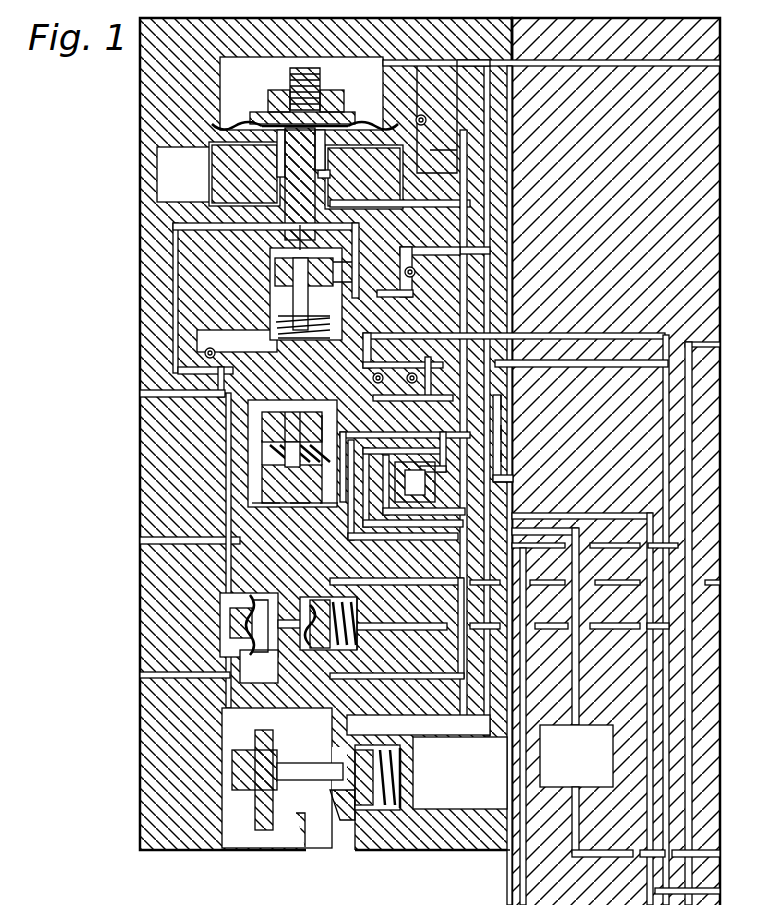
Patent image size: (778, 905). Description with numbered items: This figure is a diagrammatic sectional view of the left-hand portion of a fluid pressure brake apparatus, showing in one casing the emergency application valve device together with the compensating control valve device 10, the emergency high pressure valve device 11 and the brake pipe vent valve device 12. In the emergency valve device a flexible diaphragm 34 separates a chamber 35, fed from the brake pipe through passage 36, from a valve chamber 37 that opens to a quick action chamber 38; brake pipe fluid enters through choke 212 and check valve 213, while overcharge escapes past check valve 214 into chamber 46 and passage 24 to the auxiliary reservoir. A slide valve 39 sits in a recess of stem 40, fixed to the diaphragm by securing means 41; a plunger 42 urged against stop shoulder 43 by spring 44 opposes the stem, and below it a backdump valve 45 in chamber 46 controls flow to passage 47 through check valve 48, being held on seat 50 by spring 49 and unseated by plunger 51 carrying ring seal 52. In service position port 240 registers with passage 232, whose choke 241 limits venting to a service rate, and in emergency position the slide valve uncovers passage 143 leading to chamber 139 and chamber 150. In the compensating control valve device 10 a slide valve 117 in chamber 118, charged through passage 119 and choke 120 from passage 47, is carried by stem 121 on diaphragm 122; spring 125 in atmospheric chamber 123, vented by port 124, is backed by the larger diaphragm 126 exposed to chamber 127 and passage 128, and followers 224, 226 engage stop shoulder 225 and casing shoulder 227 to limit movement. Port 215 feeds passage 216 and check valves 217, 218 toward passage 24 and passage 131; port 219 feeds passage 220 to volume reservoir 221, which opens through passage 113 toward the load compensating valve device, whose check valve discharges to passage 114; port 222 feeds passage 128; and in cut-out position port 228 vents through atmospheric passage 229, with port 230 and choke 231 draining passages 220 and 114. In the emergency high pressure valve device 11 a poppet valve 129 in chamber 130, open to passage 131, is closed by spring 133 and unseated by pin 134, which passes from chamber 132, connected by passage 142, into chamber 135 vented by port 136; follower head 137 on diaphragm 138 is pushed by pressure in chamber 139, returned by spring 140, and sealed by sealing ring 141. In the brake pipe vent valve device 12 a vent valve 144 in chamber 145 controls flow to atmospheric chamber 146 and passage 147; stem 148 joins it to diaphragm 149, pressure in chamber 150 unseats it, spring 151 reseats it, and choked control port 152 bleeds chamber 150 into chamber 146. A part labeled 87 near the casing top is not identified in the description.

The compensating control valve device 10 is at (127, 451).
The emergency high pressure valve device 11 is at (127, 599).
The brake pipe vent valve device 12 is at (127, 770).
The passage 24 is at (601, 338).
The flexible diaphragm 34 is at (366, 128).
The chamber 35 is at (332, 58).
The passage 36 is at (606, 60).
The valve chamber 37 is at (282, 156).
The quick action chamber 38 is at (158, 158).
The slide valve 39 is at (280, 197).
The stem 40 is at (288, 190).
The securing means 41 is at (268, 116).
The plunger 42 is at (200, 263).
The stop shoulder 43 is at (180, 244).
The spring 44 is at (216, 286).
The backdump valve 45 is at (268, 331).
The chamber 46 is at (242, 341).
The passage 47 is at (490, 232).
The check valve 48 is at (410, 266).
The spring 49 is at (249, 351).
The seat 50 is at (276, 319).
The plunger 51 is at (290, 301).
The resilient ring seal 52 is at (336, 290).
The cover 87 is at (272, 19).
The passage 113 is at (625, 856).
The passage 114 is at (640, 549).
The slide valve 117 is at (418, 379).
The chamber 118 is at (504, 406).
The passage 119 is at (501, 456).
The choke 120 is at (501, 478).
The stem 121 is at (372, 378).
The flexible diaphragm 122 is at (316, 415).
The chamber 123 is at (262, 463).
The port 124 is at (146, 394).
The spring 125 is at (262, 446).
The flexible diaphragm 126 is at (262, 496).
The chamber 127 is at (262, 481).
The passage 128 is at (640, 514).
The poppet valve 129 is at (376, 651).
The chamber 130 is at (356, 636).
The passage 131 is at (595, 630).
The chamber 132 is at (330, 580).
The spring 133 is at (352, 612).
The pin 134 is at (340, 647).
The chamber 135 is at (296, 642).
The port 136 is at (146, 676).
The follower head 137 is at (262, 594).
The flexible diaphragm 138 is at (226, 602).
The chamber 139 is at (232, 641).
The spring 140 is at (242, 653).
The sealing ring 141 is at (283, 612).
The passage 142 is at (446, 516).
The passage 143 is at (262, 426).
The vent valve 144 is at (386, 822).
The chamber 145 is at (490, 832).
The chamber 146 is at (322, 806).
The passage 147 is at (331, 846).
The stem 148 is at (311, 770).
The flexible diaphragm 149 is at (270, 822).
The chamber 150 is at (241, 826).
The spring 151 is at (428, 812).
The choked control port 152 is at (236, 812).
The choke 212 is at (466, 66).
The check valve 213 is at (421, 115).
The check valve 214 is at (178, 369).
The port 215 is at (410, 528).
The passage 216 is at (506, 431).
The check valve 217 is at (380, 371).
The check valve 218 is at (413, 371).
The port 219 is at (386, 455).
The passage 220 is at (580, 690).
The volume reservoir 221 is at (527, 769).
The port 222 is at (426, 450).
The follower 224 is at (265, 410).
The stop shoulder 225 is at (291, 411).
The follower 226 is at (300, 503).
The casing shoulder 227 is at (272, 503).
The port 228 is at (338, 440).
The atmospheric passage 229 is at (146, 539).
The port 230 is at (375, 541).
The choke 231 is at (330, 505).
The passage 232 is at (400, 200).
The port 240 is at (336, 177).
The choke 241 is at (332, 197).